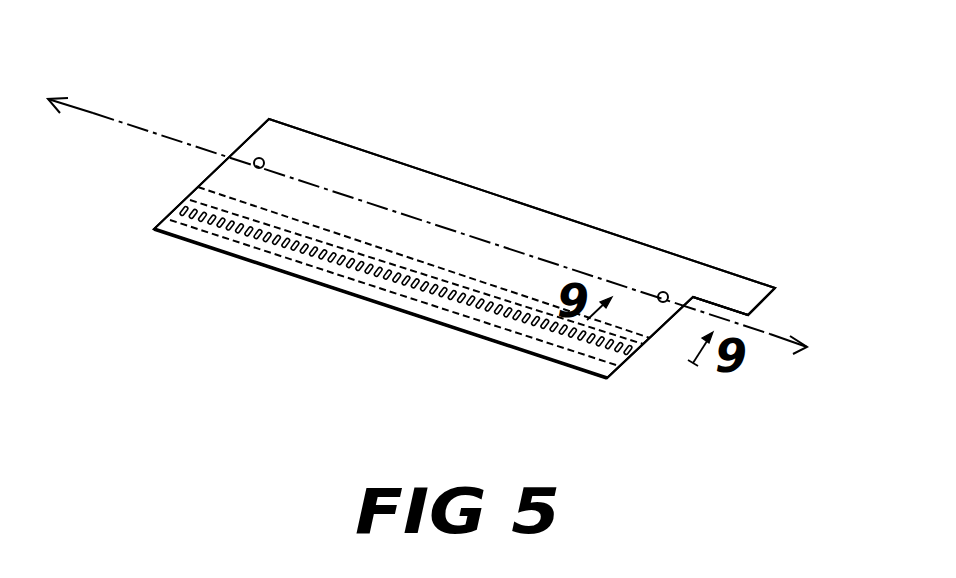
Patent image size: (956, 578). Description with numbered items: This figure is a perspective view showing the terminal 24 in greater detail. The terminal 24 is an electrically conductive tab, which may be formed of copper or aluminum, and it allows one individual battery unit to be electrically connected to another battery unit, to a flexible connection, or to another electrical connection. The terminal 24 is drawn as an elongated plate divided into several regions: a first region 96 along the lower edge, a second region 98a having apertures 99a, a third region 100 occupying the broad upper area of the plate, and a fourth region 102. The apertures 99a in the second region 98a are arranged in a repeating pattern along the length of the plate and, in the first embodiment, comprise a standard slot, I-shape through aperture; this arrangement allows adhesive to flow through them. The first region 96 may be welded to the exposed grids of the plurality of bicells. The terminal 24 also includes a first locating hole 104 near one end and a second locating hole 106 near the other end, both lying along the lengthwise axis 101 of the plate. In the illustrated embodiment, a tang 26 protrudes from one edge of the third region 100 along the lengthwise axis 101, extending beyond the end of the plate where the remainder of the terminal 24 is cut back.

The terminal 24 is at (577, 160).
The tang 26 is at (740, 292).
The first region 96 is at (216, 244).
The second region 98a is at (488, 312).
The apertures 99a is at (543, 332).
The third region 100 is at (302, 153).
The lengthwise axis 101 is at (85, 106).
The fourth region 102 is at (403, 260).
The first locating hole 104 is at (258, 157).
The second locating hole 106 is at (665, 292).